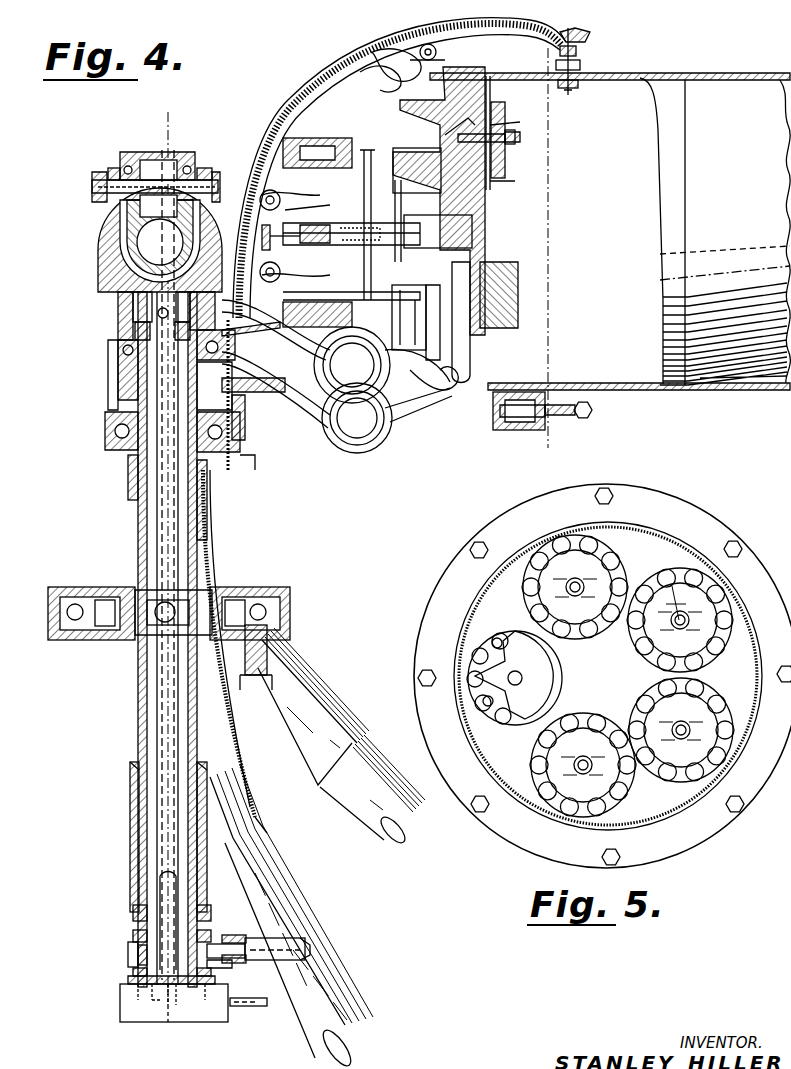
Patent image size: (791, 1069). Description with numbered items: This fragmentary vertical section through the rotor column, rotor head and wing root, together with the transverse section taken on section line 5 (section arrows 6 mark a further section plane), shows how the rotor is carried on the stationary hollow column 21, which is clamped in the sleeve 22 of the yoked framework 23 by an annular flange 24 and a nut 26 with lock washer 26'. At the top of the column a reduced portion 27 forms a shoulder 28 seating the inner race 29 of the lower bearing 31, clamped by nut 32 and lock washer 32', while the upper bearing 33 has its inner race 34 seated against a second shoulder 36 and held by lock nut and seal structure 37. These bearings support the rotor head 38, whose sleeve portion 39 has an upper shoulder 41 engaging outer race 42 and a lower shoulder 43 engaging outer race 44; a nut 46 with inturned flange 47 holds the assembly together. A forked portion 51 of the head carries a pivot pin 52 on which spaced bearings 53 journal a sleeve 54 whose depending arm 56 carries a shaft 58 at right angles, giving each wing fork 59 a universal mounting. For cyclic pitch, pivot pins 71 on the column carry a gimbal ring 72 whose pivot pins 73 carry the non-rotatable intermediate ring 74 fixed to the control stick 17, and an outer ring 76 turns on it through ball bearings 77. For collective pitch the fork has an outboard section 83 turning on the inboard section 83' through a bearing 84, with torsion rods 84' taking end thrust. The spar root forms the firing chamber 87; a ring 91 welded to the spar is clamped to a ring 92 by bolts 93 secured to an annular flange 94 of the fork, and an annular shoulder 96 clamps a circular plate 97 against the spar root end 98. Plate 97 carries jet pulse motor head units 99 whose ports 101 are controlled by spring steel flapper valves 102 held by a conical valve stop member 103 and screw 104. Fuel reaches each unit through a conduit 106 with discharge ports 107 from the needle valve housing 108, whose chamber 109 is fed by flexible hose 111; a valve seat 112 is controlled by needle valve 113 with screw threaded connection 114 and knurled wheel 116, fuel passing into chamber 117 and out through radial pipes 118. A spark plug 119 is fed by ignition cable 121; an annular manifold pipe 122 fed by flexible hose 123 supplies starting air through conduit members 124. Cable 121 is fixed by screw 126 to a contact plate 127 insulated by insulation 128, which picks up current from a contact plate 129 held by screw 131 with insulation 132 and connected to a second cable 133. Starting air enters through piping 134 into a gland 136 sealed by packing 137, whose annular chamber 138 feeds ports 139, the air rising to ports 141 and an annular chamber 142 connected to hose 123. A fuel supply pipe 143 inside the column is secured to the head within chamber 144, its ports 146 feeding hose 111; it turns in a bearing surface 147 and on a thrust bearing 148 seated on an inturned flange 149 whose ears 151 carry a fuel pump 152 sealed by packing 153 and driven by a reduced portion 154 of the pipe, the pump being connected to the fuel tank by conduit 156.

In FIG. 4, the section line 5 is at (560, 434).
In FIG. 4, the section line 6- 6 is at (180, 726).
In FIG. 4, the overhead control stick 17 is at (350, 800).
In FIG. 4, the stationary hollow shaft or column 21 is at (138, 690).
In FIG. 4, the sleeve 22 is at (130, 854).
In FIG. 4, the yoked framework 23 is at (360, 1010).
In FIG. 4, the annular flange 24 is at (130, 748).
In FIG. 4, the nut 26 is at (145, 914).
In FIG. 4, the lock washer 26' is at (107, 897).
In FIG. 4, the reduced portion 27 is at (110, 378).
In FIG. 4, the shoulder 28 is at (135, 475).
In FIG. 4, the inner race 29 is at (132, 465).
In FIG. 4, the bearing 31 is at (110, 440).
In FIG. 4, the nut 32 is at (96, 398).
In FIG. 4, the lock washer 32' is at (98, 413).
In FIG. 4, the bearing 33 is at (122, 348).
In FIG. 4, the inner race 34 is at (125, 352).
In FIG. 4, the second shoulder 36 is at (122, 362).
In FIG. 4, the lock nut and seal structure 37 is at (158, 313).
In FIG. 4, the rotor head 38 is at (118, 292).
In FIG. 4, the sleeve portion 39 is at (140, 310).
In FIG. 4, the upper shoulder 41 is at (130, 335).
In FIG. 4, the outer race 42 is at (125, 345).
In FIG. 4, the lower shoulder 43 is at (105, 425).
In FIG. 4, the outer race 44 is at (118, 445).
In FIG. 4, the nut 46 is at (118, 450).
In FIG. 4, the inturned flange 47 is at (130, 462).
In FIG. 4, the forked portion 51 is at (100, 240).
In FIG. 4, the pivot pin 52 is at (90, 187).
In FIG. 4, the bearings 53 is at (118, 170).
In FIG. 4, the sleeve 54 is at (185, 160).
In FIG. 4, the depending arm 56 is at (128, 236).
In FIG. 4, the shaft 58 is at (158, 206).
In FIG. 4, the wing fork 59 is at (105, 168).
In FIG. 4, the pivot pins 71 is at (205, 585).
In FIG. 4, the gimbal ring 72 is at (112, 590).
In FIG. 4, the pivot pins 73 is at (100, 586).
In FIG. 4, the intermediate ring 74 is at (105, 636).
In FIG. 4, the outer ring 76 is at (275, 596).
In FIG. 4, the ball bearings 77 is at (290, 608).
In FIG. 4, the outboard section 83 is at (405, 176).
In FIG. 4, the inboard section 83' is at (149, 286).
In FIG. 4, the bearing 84 is at (317, 222).
In FIG. 4, the torsion rods 84' is at (295, 236).
In FIG. 4, the firing chamber 87 is at (640, 72).
In FIG. 5, the firing chamber 87 is at (664, 540).
In FIG. 4, the ring 91 is at (505, 385).
In FIG. 4, the ring 92 is at (535, 432).
In FIG. 5, the ring 92 is at (447, 596).
In FIG. 4, the securing bolts 93 is at (560, 412).
In FIG. 5, the securing bolts 93 is at (610, 488).
In FIG. 4, the annular flange 94 is at (505, 432).
In FIG. 4, the annular shoulder 96 is at (730, 80).
In FIG. 4, the circular plate member 97 is at (487, 255).
In FIG. 5, the circular plate member 97 is at (630, 679).
In FIG. 4, the root end 98 is at (492, 88).
In FIG. 4, the jet pulse motor head units 99 is at (470, 300).
In FIG. 5, the jet pulse motor head units 99 is at (715, 712).
In FIG. 4, the ports 101 is at (507, 168).
In FIG. 5, the ports 101 is at (484, 638).
In FIG. 4, the spring steel flapper valves 102 is at (510, 185).
In FIG. 5, the spring steel flapper valves 102 is at (590, 552).
In FIG. 4, the valve stop member 103 is at (522, 138).
In FIG. 5, the valve stop member 103 is at (654, 645).
In FIG. 4, the screw 104 is at (516, 136).
In FIG. 5, the screw 104 is at (675, 608).
In FIG. 4, the conduit 106 is at (416, 249).
In FIG. 4, the discharge ports 107 is at (456, 124).
In FIG. 4, the throttling needle valve housing 108 is at (310, 280).
In FIG. 4, the chamber 109 is at (438, 231).
In FIG. 4, the flexible hose connection 111 is at (332, 350).
In FIG. 4, the valve seat 112 is at (401, 221).
In FIG. 4, the needle valve 113 is at (322, 232).
In FIG. 4, the screw threaded connection 114 is at (340, 222).
In FIG. 4, the knurled wheel 116 is at (272, 239).
In FIG. 4, the chamber 117 is at (360, 244).
In FIG. 4, the pipes 118 is at (364, 182).
In FIG. 4, the spark plug 119 is at (580, 40).
In FIG. 4, the ignition cable 121 is at (430, 35).
In FIG. 4, the annular manifold pipe 122 is at (425, 48).
In FIG. 4, the flexible hose 123 is at (352, 448).
In FIG. 4, the conduit members 124 is at (370, 62).
In FIG. 4, the screw 126 is at (232, 440).
In FIG. 4, the contact plate member 127 is at (208, 462).
In FIG. 4, the insulation 128 is at (225, 460).
In FIG. 4, the contact plate 129 is at (203, 482).
In FIG. 4, the screw 131 is at (205, 495).
In FIG. 4, the insulation 132 is at (200, 470).
In FIG. 4, the second ignition cable 133 is at (215, 520).
In FIG. 4, the piping 134 is at (285, 942).
In FIG. 4, the gland 136 is at (130, 950).
In FIG. 4, the packing 137 is at (133, 936).
In FIG. 4, the annular chamber 138 is at (138, 958).
In FIG. 4, the ports 139 is at (222, 940).
In FIG. 4, the ports 141 is at (210, 370).
In FIG. 4, the annular chamber 142 is at (215, 392).
In FIG. 4, the fuel supply pipe 143 is at (160, 510).
In FIG. 4, the chamber 144 is at (135, 300).
In FIG. 4, the ports 146 is at (216, 341).
In FIG. 4, the bearing surface 147 is at (140, 395).
In FIG. 4, the thrust bearing 148 is at (212, 975).
In FIG. 4, the inturned flange 149 is at (155, 988).
In FIG. 4, the ears 151 is at (130, 982).
In FIG. 4, the fuel pump 152 is at (132, 1010).
In FIG. 4, the packing 153 is at (180, 990).
In FIG. 4, the reduced portion 154 is at (168, 1008).
In FIG. 4, the conduit 156 is at (250, 1010).